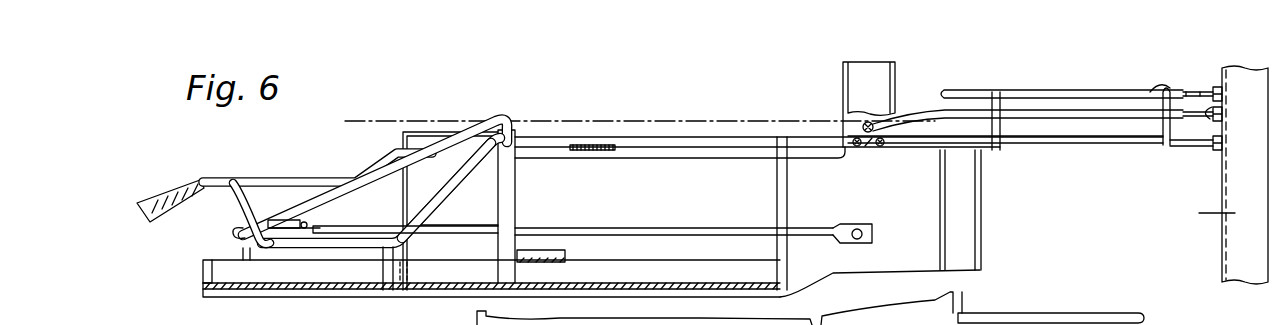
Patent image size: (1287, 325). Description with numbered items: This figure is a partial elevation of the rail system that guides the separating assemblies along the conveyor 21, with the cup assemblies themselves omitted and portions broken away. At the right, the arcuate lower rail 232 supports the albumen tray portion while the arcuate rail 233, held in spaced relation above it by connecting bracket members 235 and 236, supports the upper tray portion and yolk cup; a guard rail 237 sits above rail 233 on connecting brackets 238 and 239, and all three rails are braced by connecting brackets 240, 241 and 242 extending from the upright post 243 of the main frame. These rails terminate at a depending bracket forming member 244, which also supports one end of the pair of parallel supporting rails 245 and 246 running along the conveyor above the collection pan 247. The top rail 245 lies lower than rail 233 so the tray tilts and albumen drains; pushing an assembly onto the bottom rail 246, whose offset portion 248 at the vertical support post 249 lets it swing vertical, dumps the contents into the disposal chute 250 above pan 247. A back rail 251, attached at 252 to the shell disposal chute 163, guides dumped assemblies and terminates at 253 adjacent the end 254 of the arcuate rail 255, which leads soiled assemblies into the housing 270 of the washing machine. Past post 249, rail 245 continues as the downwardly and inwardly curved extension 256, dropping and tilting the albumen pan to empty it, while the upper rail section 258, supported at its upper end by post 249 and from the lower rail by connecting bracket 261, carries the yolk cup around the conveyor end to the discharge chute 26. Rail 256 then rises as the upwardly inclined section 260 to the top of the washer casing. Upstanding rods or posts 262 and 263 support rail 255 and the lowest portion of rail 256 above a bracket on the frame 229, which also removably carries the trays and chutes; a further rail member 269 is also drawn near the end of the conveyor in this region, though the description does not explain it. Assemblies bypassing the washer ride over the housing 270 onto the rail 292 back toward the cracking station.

The conveyor 21 is at (767, 119).
The discharge chute 26 is at (153, 190).
The shell disposal chute 163 is at (943, 218).
The supporting frame 229 is at (418, 138).
The arcuate lower rail 232 is at (1048, 152).
The arcuate rail 233 is at (1100, 120).
The connecting bracket member 235 is at (1163, 137).
The connecting bracket member 236 is at (999, 128).
The guard rail 237 is at (1060, 92).
The connecting bracket 238 is at (1155, 87).
The connecting bracket 239 is at (996, 105).
The connecting bracket 240 is at (1245, 175).
The connecting bracket 241 is at (1226, 104).
The connecting bracket 242 is at (1198, 92).
The upright post 243 is at (1200, 228).
The depending bracket forming member 244 is at (858, 88).
The supporting rail 245 is at (648, 135).
The supporting rail 246 is at (713, 160).
The collection pan 247 is at (700, 286).
The offset portion 248 is at (556, 151).
The vertical support post 249 is at (516, 208).
The disposal tray or chute 250 is at (543, 262).
The back rail 251 is at (682, 227).
The attachment point 252 is at (868, 224).
The terminating end of back rail 253 is at (333, 233).
The end of arcuate rail 254 is at (287, 220).
The arcuate rail 255 is at (369, 226).
The curved extension 256 is at (452, 188).
The upper rail section 258 is at (473, 121).
The upwardly inclined section 260 is at (418, 324).
The connecting bracket 261 is at (236, 212).
The upstanding rod or post 262 is at (288, 248).
The upstanding rod or post 263 is at (247, 250).
The tube 269 is at (360, 160).
The washer housing 270 is at (680, 318).
The rail 292 is at (1055, 303).